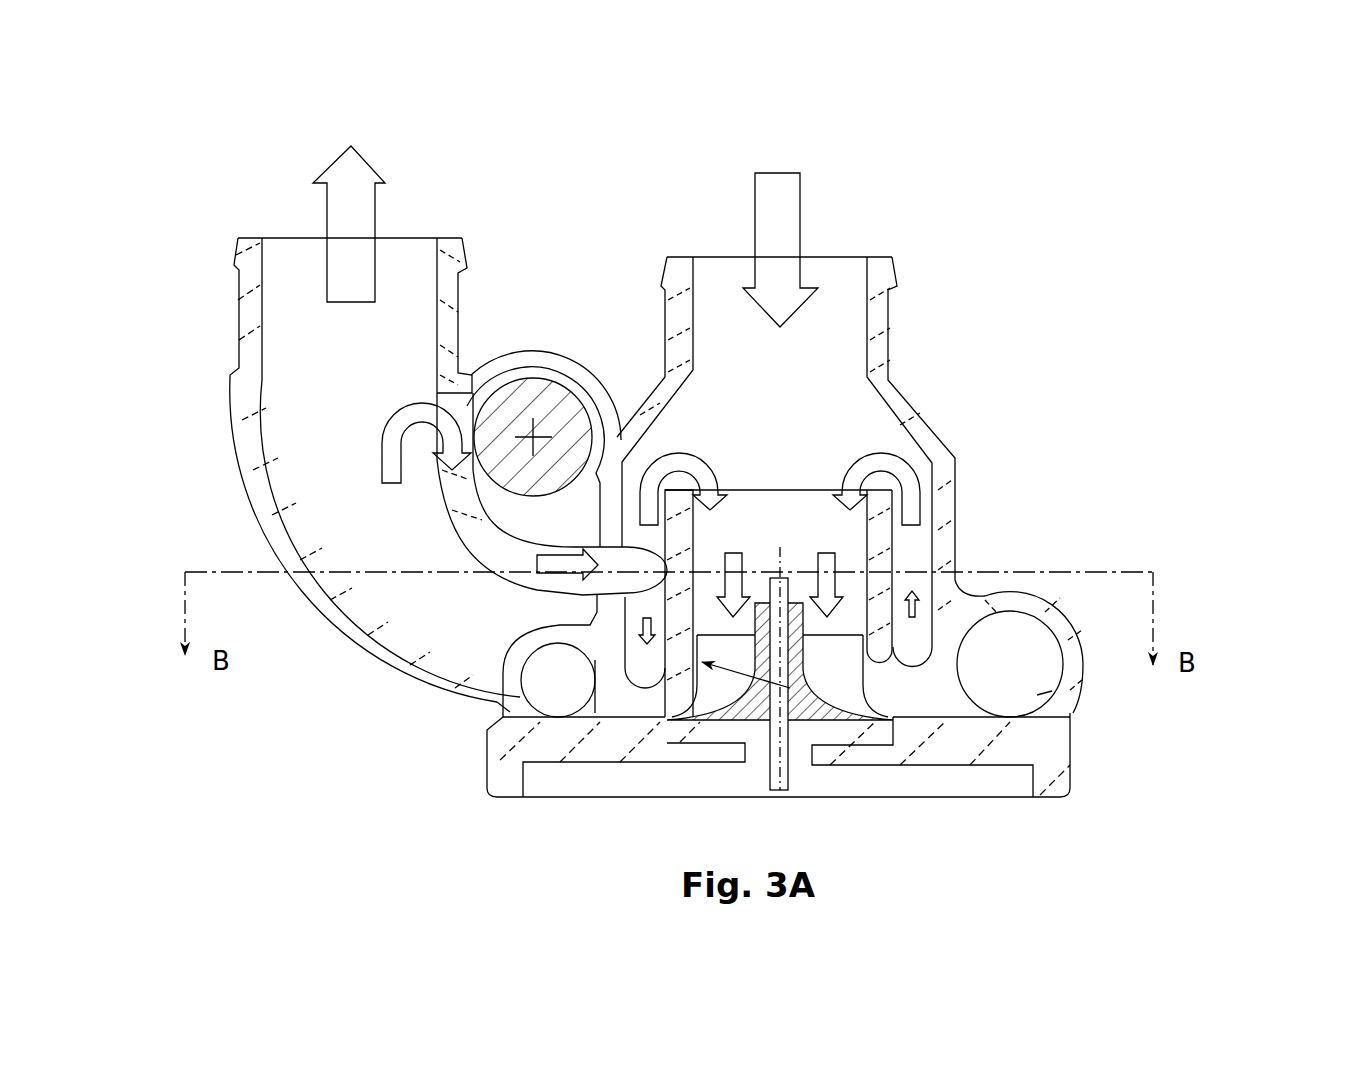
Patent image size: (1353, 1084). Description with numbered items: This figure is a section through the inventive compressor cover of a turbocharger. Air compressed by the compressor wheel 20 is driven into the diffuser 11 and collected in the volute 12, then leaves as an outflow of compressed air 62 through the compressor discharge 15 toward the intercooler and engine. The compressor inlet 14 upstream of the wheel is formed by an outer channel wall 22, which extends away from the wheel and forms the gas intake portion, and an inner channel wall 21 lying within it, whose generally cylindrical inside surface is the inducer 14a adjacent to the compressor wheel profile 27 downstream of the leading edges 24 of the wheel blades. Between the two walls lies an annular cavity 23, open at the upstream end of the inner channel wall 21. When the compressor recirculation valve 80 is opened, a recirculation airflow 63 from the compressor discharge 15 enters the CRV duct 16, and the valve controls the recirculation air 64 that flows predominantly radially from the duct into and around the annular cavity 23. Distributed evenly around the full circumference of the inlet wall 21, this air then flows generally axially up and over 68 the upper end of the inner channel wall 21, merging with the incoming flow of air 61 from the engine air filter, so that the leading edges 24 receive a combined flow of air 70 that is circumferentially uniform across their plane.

The diffuser 11 is at (1037, 695).
The volute 12 is at (850, 757).
The compressor inlet 14 is at (805, 348).
The inducer section 14a is at (692, 662).
The compressor discharge 15 is at (379, 338).
The CRV duct 16 is at (620, 582).
The compressor wheel 20 is at (990, 596).
The inner channel wall 21 is at (877, 520).
The outer channel wall 22 is at (912, 563).
The annular cavity 23 is at (962, 573).
The leading edges 24 is at (968, 592).
The compressor wheel profile 27 is at (915, 723).
The incoming flow of air 61 is at (775, 280).
The outflow of compressed air 62 is at (345, 217).
The recirculation airflow 63 is at (422, 423).
The recirculation air 64 is at (537, 557).
The airflow over the inner wall 68 is at (650, 480).
The flow of air 70 is at (722, 595).
The compressor recirculation valve 80 is at (557, 413).